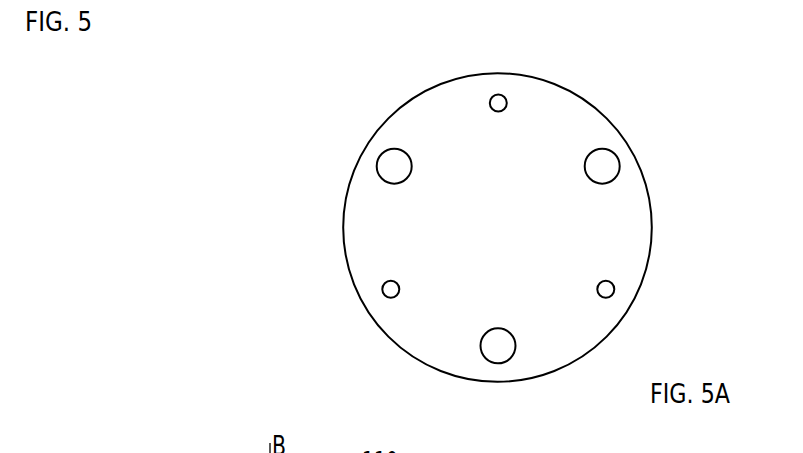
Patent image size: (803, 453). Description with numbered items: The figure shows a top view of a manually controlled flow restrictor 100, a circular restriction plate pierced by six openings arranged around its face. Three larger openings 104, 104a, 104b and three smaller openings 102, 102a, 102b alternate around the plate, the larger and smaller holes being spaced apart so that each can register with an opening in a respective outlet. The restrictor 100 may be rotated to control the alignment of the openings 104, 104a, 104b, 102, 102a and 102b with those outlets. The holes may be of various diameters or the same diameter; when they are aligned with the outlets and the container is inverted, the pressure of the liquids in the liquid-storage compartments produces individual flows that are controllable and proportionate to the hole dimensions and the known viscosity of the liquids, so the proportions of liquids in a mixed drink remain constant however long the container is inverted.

The manually controlled flow restrictor 100 is at (275, 231).
The opening 102 is at (672, 309).
The opening 102a is at (313, 329).
The opening 102b is at (544, 64).
The opening 104 is at (327, 131).
The opening 104a is at (541, 388).
The opening 104b is at (670, 131).